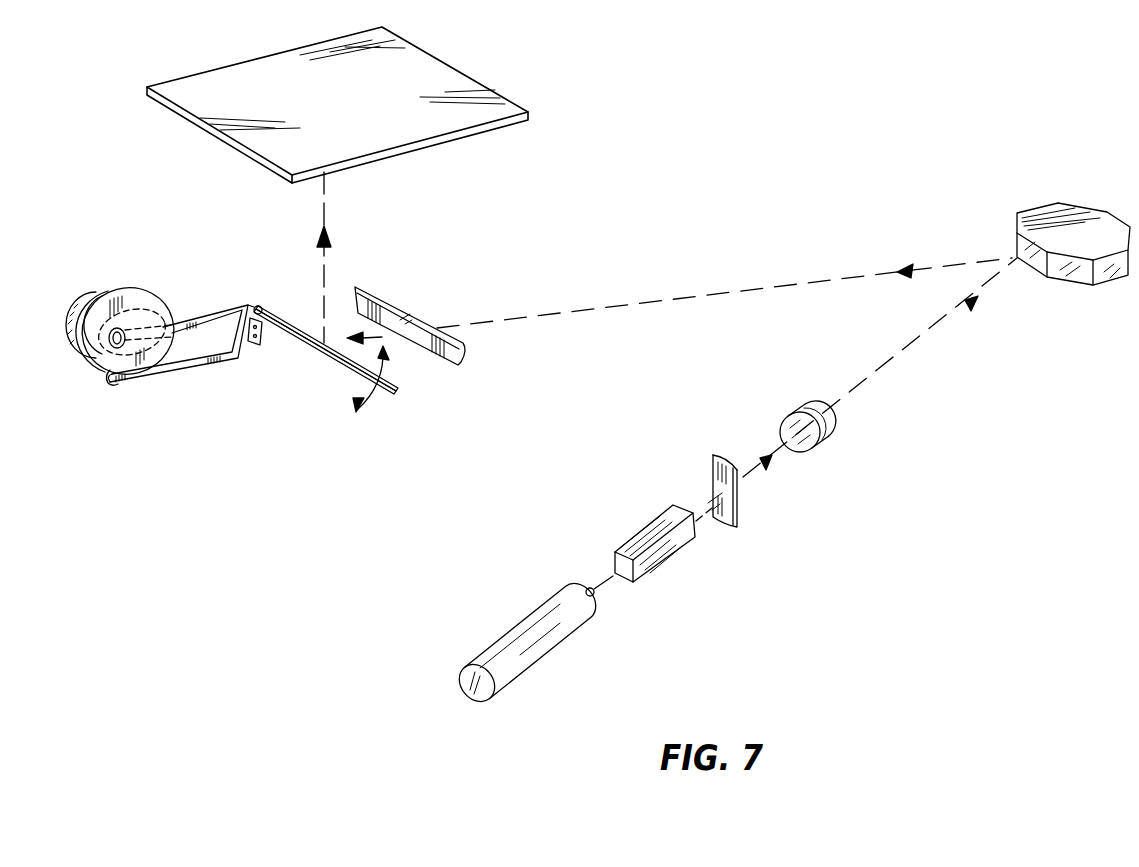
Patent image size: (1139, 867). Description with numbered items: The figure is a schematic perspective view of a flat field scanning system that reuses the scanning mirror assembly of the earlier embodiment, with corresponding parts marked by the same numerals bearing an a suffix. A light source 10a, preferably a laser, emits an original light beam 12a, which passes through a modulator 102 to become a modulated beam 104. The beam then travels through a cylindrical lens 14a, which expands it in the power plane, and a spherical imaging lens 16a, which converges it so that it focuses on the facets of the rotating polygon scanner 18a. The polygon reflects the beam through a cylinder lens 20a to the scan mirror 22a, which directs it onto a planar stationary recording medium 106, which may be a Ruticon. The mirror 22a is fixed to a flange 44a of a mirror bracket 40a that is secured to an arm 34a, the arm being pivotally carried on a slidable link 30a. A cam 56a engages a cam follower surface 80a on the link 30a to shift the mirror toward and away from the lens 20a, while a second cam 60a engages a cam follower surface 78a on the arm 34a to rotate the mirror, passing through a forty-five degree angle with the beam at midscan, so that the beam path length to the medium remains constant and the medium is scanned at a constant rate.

The planar stationary recording medium 106 is at (512, 108).
The cam 56a is at (70, 305).
The second cam 60a is at (141, 290).
The cam follower surface 80a is at (140, 318).
The arm 34a is at (233, 358).
The cam follower surface 78a is at (108, 378).
The slidable link 30a is at (256, 306).
The mirror bracket 40a is at (260, 334).
The mirror 22a is at (296, 327).
The flange 44a is at (335, 361).
The cylinder lens 20a is at (415, 317).
The modulated beam 104 is at (735, 291).
The rotating polygon scanner 18a is at (1103, 282).
The spherical imaging lens 16a is at (832, 437).
The cylindrical lens 14a is at (740, 522).
The modulator 102 is at (631, 540).
The original light beam 12a is at (603, 587).
The light source 10a is at (530, 617).